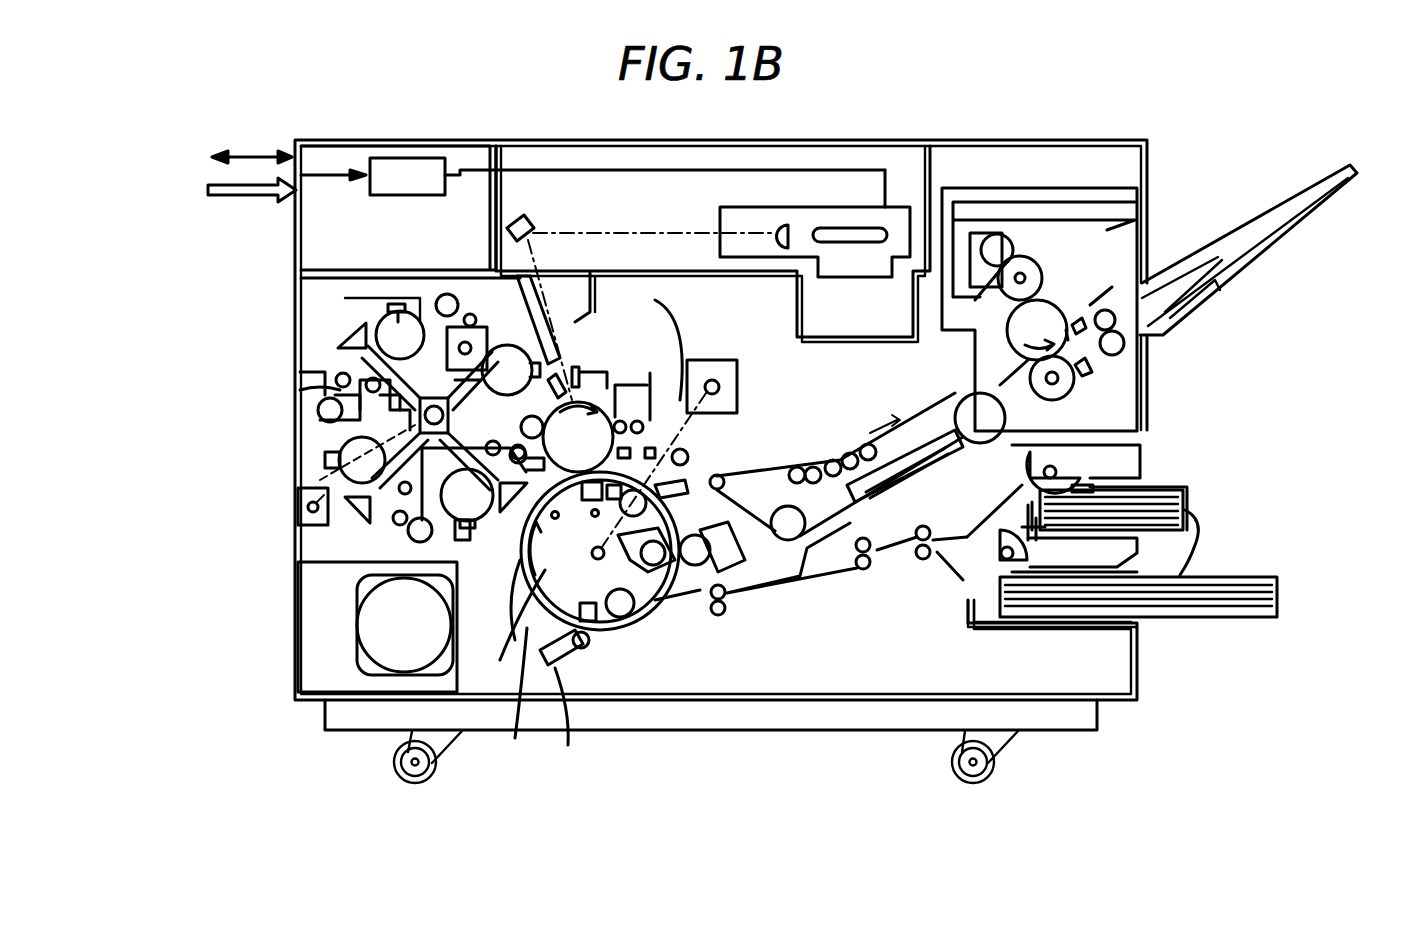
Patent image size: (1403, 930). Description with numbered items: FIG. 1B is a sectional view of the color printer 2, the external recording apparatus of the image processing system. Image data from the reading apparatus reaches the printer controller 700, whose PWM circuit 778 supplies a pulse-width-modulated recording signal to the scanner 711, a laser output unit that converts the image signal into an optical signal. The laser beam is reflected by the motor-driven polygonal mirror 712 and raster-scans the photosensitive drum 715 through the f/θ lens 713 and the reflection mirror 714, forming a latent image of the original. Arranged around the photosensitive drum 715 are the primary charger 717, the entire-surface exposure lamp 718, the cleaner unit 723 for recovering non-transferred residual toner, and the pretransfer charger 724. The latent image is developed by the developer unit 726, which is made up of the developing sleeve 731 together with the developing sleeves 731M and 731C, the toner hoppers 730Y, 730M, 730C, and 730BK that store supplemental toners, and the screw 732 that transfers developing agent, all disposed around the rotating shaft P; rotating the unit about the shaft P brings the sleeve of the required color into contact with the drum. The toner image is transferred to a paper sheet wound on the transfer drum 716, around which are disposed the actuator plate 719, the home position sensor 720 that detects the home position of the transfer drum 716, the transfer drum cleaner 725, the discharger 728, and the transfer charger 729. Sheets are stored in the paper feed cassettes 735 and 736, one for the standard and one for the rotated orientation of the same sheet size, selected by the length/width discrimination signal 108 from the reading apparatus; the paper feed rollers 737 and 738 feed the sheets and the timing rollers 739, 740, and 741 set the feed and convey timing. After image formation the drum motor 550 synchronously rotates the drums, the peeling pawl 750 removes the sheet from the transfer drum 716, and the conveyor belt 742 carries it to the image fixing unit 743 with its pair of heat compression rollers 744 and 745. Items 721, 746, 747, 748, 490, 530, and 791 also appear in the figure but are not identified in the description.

The color printer 2 is at (1172, 205).
The length/width discrimination signal 108 is at (246, 157).
The printer controller 700 is at (422, 258).
The PWM circuit 778 is at (430, 196).
The scanner 711 is at (808, 200).
The polygonal mirror 712 is at (870, 243).
The f/θ lens 713 is at (778, 227).
The reflection mirror 714 is at (528, 222).
The photosensitive drum 715 is at (612, 437).
The transfer drum 716 is at (600, 551).
The primary charger 717 is at (632, 385).
The entire-surface exposure lamp 718 is at (588, 372).
The actuator plate 719 is at (516, 624).
The home position sensor 720 is at (523, 699).
The roller 721 is at (575, 724).
The cleaner unit 723 is at (672, 350).
The pretransfer charger 724 is at (515, 600).
The transfer drum cleaner 725 is at (693, 535).
The developer unit 726 is at (335, 340).
The discharger 728 is at (603, 628).
The transfer charger 729 is at (585, 498).
The toner hopper 730BK is at (400, 300).
The toner hopper 730Y is at (510, 350).
The toner hopper 730C is at (338, 460).
The toner hopper 730M is at (470, 522).
The developing sleeve 731 is at (560, 335).
The developing sleeve 731C is at (318, 412).
The developing sleeve 731M is at (380, 550).
The screw 732 is at (458, 303).
The paper feed cassette 735 is at (1175, 488).
The paper feed cassette 736 is at (1255, 575).
The paper feed roller 737 is at (1090, 462).
The paper feed roller 738 is at (985, 525).
The timing roller 739 is at (924, 560).
The timing roller 740 is at (864, 570).
The timing roller 741 is at (721, 615).
The conveyor belt 742 is at (800, 468).
The image fixing unit 743 is at (1096, 300).
The heat compression roller 744 is at (1060, 400).
The heat compression roller 745 is at (1008, 322).
The roller 746 is at (1030, 262).
The roller 747 is at (997, 234).
The fuser housing 748 is at (1060, 225).
The peeling pawl 750 is at (688, 480).
The guide 490 is at (680, 615).
The sensor 530 is at (300, 525).
The drum motor 550 is at (712, 360).
The paper path 791 is at (1205, 530).
The rotating shaft P is at (434, 398).